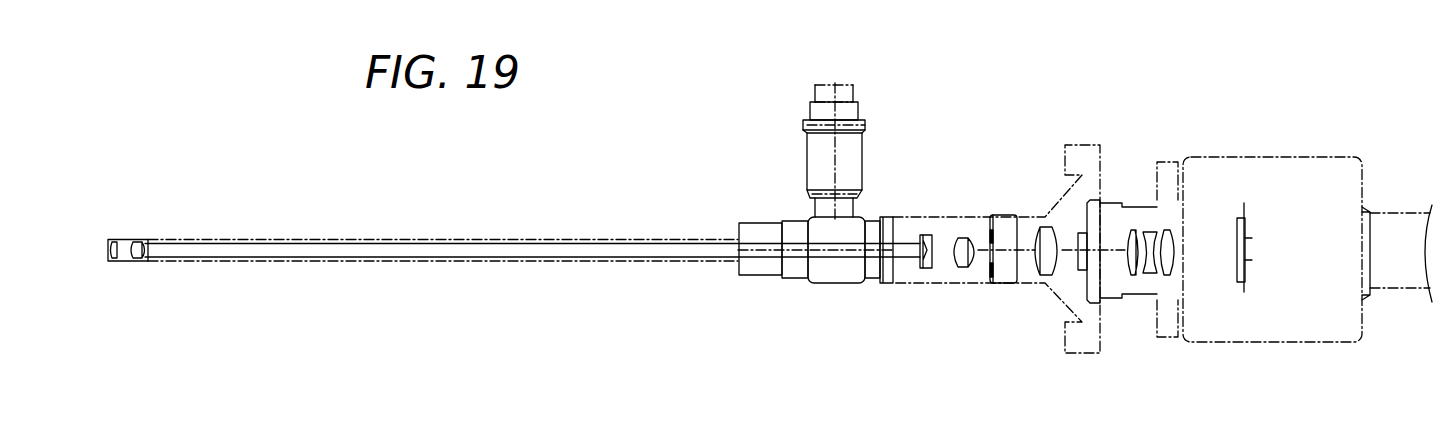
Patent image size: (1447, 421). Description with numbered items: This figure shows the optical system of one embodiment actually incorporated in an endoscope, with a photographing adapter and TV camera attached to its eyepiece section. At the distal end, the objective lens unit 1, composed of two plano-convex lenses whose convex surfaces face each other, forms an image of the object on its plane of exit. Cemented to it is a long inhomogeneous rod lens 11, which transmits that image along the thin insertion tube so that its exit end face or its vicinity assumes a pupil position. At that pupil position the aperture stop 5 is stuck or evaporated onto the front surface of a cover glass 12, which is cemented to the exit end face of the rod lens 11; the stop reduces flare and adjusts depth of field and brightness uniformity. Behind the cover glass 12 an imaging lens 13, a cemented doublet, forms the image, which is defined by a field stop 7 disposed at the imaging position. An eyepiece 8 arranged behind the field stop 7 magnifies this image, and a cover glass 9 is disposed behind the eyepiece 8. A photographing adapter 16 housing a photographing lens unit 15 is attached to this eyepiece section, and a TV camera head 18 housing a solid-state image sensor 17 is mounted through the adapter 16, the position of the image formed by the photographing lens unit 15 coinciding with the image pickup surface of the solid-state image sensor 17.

The objective lens unit 1 is at (148, 265).
The inhomogeneous rod lens 11 is at (624, 249).
The cover glass 12 is at (928, 233).
The aperture stop 5 is at (928, 268).
The imaging lens 13 is at (963, 267).
The field stop 7 is at (998, 275).
The eyepiece 8 is at (1055, 230).
The cover glass 9 is at (1082, 232).
The photographing lens unit 15 is at (1178, 226).
The photographing adapter 16 is at (1137, 300).
The solid-state image sensor 17 is at (1245, 288).
The TV camera head 18 is at (1267, 172).